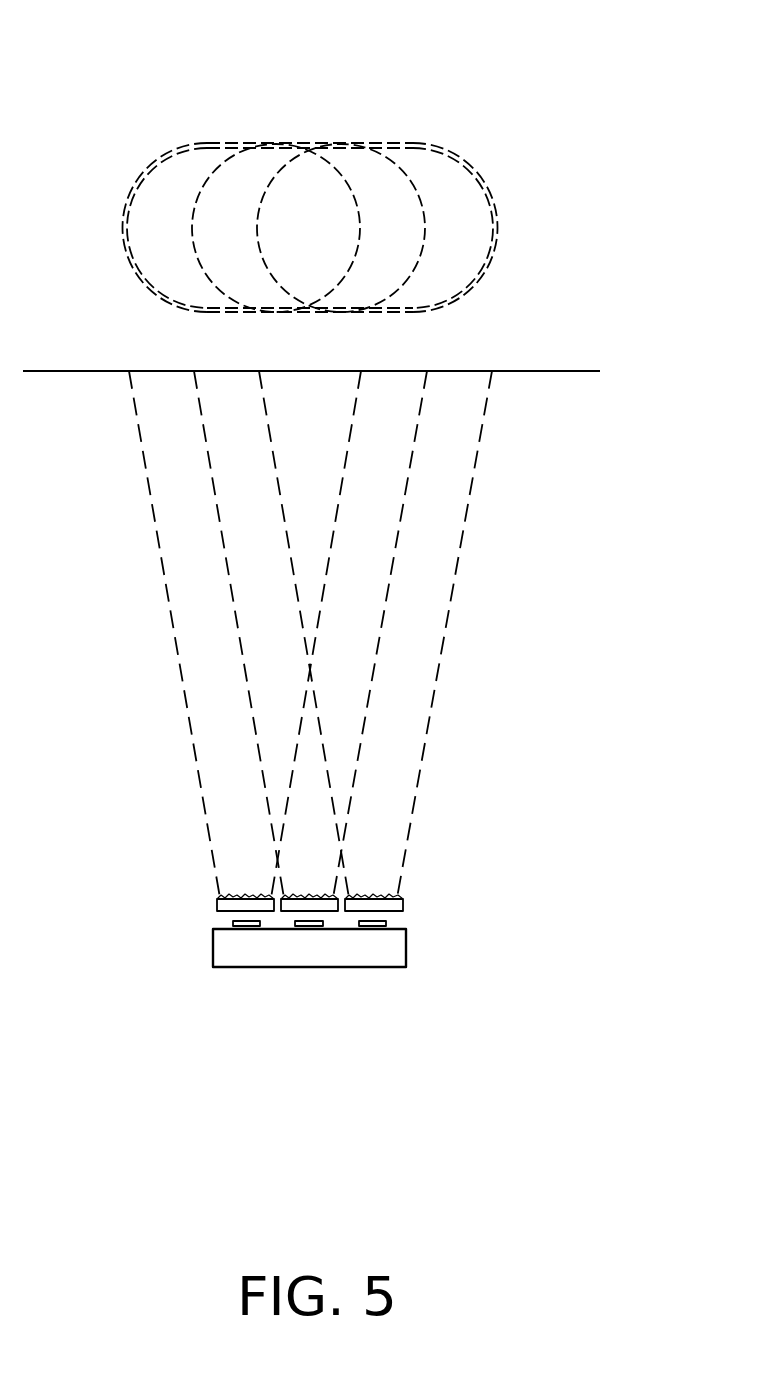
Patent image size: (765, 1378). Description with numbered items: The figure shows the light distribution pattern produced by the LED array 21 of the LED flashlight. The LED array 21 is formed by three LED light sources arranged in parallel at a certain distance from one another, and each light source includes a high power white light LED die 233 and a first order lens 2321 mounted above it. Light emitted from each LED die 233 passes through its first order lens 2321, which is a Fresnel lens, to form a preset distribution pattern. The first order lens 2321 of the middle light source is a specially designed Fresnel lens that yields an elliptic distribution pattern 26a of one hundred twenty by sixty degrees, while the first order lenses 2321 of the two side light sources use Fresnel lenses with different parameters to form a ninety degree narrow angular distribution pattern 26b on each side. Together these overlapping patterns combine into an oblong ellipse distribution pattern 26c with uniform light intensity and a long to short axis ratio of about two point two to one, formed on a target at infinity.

The oblong ellipse distribution pattern 26c is at (488, 58).
The narrow angular distribution pattern 26b is at (158, 158).
The elliptic distribution pattern 26a is at (222, 166).
The first order lens 2321 is at (220, 899).
The LED die 233 is at (230, 922).
The LED array 21 is at (387, 952).